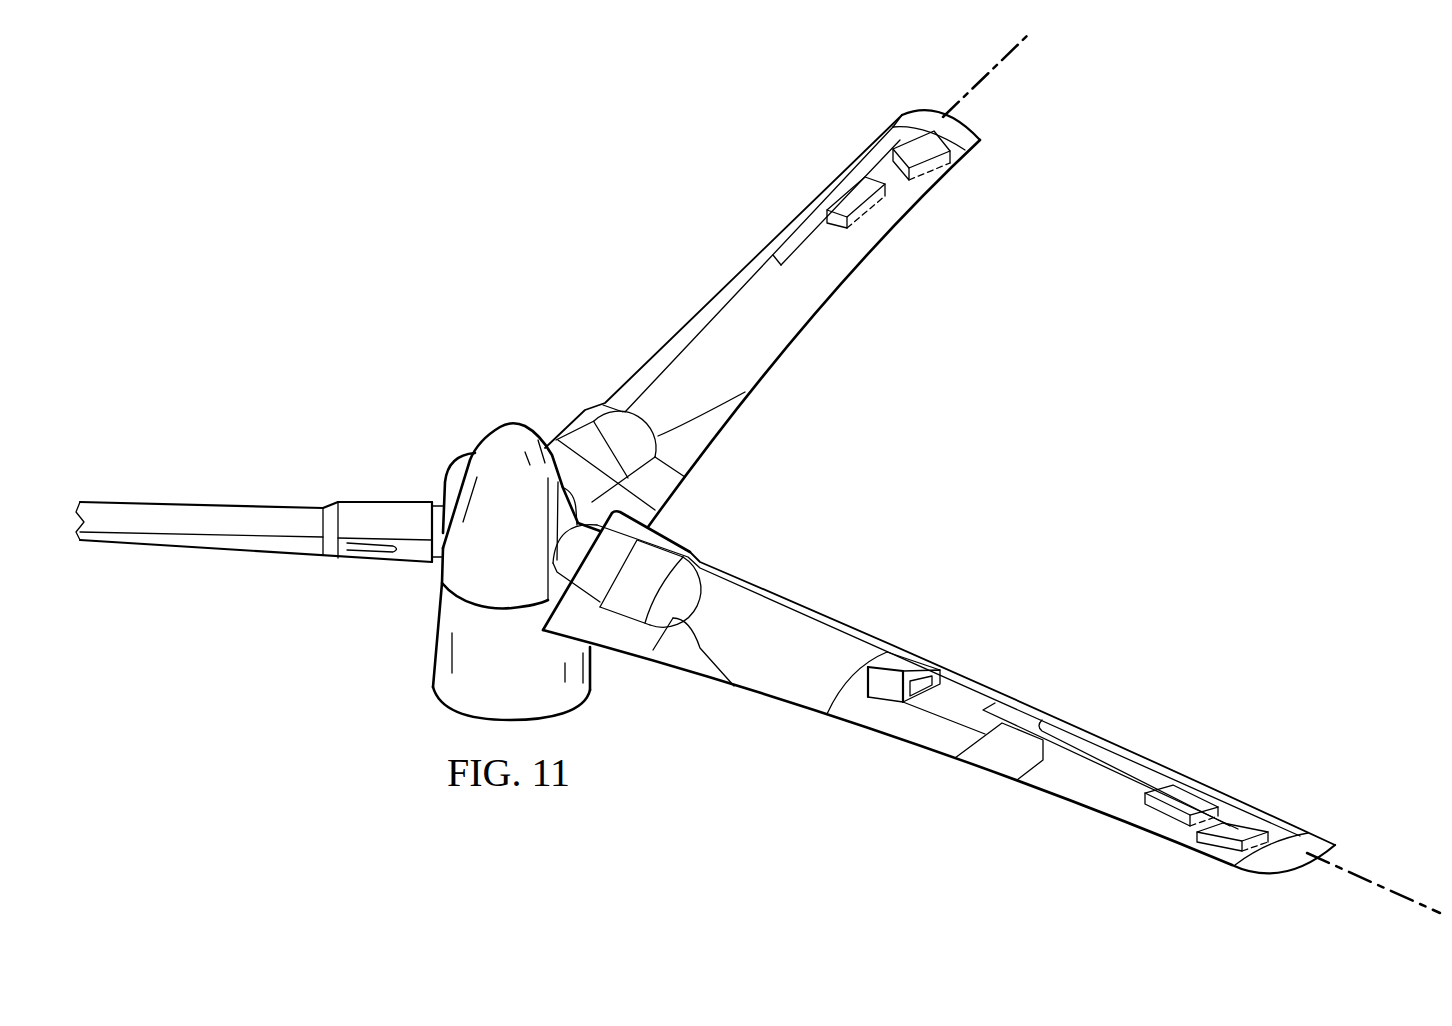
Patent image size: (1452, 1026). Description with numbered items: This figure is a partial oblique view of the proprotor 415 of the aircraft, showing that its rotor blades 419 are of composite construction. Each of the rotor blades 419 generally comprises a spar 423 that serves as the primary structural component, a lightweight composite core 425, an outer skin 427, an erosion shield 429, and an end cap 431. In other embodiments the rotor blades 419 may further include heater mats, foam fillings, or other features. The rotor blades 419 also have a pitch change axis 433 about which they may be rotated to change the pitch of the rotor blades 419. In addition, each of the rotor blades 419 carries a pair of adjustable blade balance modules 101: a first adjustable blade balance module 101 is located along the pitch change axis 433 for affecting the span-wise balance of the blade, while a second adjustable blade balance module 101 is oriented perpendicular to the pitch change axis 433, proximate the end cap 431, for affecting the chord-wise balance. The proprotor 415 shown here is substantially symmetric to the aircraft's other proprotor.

The adjustable blade balance module 101 is at (900, 143).
The proprotor 415 is at (1216, 178).
The rotor blade 419 is at (203, 503).
The spar 423 is at (912, 663).
The lightweight composite core 425 is at (853, 688).
The outer skin 427 is at (692, 318).
The erosion shield 429 is at (785, 230).
The end cap 431 is at (927, 122).
The pitch change axis 433 is at (987, 73).